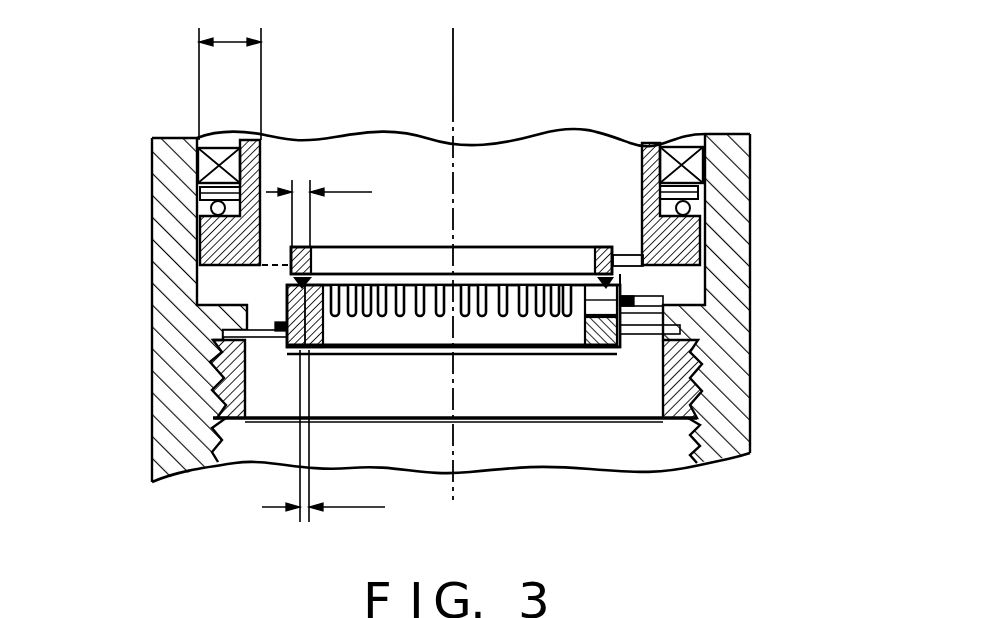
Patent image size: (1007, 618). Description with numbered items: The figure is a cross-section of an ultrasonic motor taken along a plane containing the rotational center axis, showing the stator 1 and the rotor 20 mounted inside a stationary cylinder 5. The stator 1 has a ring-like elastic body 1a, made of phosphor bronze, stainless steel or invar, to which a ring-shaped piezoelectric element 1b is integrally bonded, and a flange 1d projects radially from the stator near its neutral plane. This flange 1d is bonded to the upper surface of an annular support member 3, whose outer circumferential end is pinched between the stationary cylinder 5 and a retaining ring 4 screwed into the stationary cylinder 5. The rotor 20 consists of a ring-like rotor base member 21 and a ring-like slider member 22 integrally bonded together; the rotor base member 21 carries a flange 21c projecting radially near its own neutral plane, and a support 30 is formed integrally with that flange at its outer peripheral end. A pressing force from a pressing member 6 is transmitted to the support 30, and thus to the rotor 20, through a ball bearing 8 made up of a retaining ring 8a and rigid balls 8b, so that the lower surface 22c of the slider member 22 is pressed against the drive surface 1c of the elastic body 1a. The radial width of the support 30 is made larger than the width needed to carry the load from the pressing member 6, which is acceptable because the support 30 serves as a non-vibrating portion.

The stator 1 is at (455, 449).
The elastic body 1a is at (510, 335).
The piezoelectric element 1b is at (562, 338).
The drive surface 1c is at (560, 275).
The flange 1d is at (610, 343).
The annular support member 3 is at (643, 338).
The retaining ring 4 is at (246, 384).
The stationary cylinder 5 is at (158, 386).
The pressing member 6 is at (220, 147).
The ball bearing 8 is at (371, 202).
The retaining ring 8a is at (207, 215).
The rigid balls 8b is at (214, 206).
The rotor 20 is at (529, 185).
The rotor base member 21 is at (500, 258).
The flange 21c is at (622, 256).
The slider member 22 is at (453, 210).
The lower surface 22c is at (620, 297).
The support 30 is at (750, 187).